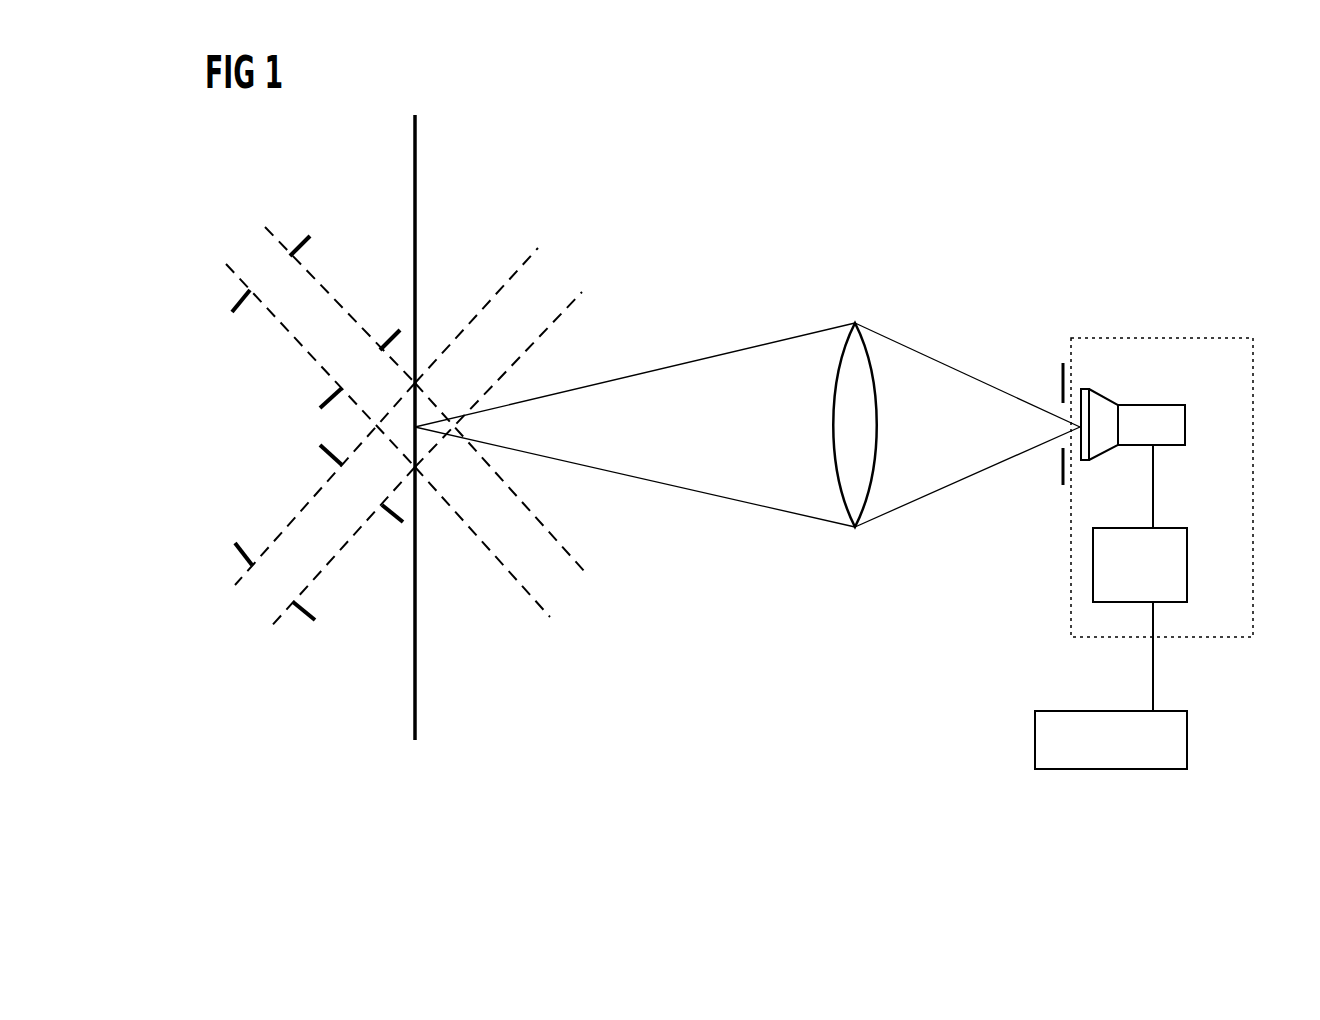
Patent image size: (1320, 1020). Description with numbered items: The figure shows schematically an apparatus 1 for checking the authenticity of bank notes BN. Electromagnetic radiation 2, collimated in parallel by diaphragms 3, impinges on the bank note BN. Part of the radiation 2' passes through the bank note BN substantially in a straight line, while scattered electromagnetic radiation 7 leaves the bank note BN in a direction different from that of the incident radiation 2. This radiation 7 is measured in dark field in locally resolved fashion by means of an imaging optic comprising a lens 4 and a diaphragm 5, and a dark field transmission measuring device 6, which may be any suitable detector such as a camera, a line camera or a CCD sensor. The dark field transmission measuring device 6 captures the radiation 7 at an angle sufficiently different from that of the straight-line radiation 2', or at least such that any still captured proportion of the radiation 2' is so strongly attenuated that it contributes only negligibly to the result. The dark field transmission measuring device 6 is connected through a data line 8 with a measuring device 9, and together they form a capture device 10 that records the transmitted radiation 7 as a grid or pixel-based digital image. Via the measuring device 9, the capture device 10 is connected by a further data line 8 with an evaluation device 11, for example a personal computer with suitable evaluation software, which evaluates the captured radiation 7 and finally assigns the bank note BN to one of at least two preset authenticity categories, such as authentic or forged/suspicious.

The apparatus 1 is at (1081, 191).
The electromagnetic radiation 2 is at (320, 428).
The radiation passing in a straight line 2' is at (500, 436).
The diaphragms 3 is at (299, 242).
The lens 4 is at (845, 465).
The diaphragm 5 is at (1060, 481).
The dark field transmission measuring device 6 is at (1148, 412).
The electromagnetic radiation passing through the bank note 7 is at (801, 334).
The data line 8 is at (1150, 478).
The measuring device 9 is at (1188, 572).
The capture device 10 is at (1070, 564).
The evaluation device 11 is at (1034, 727).
The bank note BN is at (415, 158).